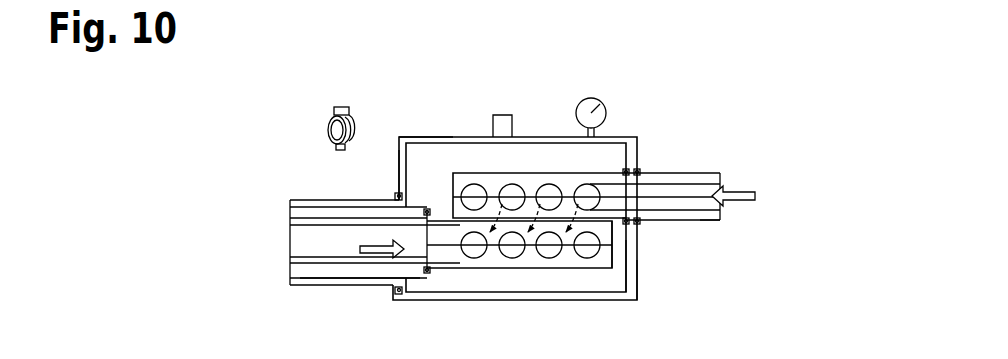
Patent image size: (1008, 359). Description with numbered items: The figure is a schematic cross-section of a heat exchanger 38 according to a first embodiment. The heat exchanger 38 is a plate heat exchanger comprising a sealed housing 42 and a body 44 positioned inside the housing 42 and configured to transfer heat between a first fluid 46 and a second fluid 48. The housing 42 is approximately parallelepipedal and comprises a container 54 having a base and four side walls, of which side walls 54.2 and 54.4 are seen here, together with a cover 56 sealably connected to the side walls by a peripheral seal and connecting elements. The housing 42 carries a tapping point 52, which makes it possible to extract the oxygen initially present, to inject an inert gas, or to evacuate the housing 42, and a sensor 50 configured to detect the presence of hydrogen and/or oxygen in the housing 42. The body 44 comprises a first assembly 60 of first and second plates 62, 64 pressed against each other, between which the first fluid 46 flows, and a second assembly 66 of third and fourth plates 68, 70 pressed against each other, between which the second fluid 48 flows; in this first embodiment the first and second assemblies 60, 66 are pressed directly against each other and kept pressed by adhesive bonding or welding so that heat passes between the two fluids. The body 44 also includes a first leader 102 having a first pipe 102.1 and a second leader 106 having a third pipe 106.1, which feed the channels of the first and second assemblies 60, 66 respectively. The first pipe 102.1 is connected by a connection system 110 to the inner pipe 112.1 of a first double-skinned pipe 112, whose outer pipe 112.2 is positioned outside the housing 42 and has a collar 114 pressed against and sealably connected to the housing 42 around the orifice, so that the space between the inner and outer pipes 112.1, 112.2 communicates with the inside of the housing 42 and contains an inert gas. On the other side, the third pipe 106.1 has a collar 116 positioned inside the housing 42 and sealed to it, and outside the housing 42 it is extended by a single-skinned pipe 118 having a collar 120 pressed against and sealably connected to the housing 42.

The heat exchanger 38 is at (732, 142).
The housing 42 is at (432, 134).
The body 44 is at (470, 172).
The first fluid 46 is at (355, 245).
The second fluid 48 is at (762, 195).
The sensor 50 is at (608, 108).
The tapping point 52 is at (492, 115).
The container 54 is at (637, 275).
The side wall 54.2 is at (397, 172).
The side wall 54.4 is at (637, 258).
The cover 56 is at (412, 136).
The first assembly 60 is at (527, 258).
The first plate 62 is at (567, 258).
The second plate 64 is at (605, 242).
The second assembly 66 is at (533, 174).
The third plate 68 is at (583, 172).
The fourth plate 70 is at (571, 196).
The first leader 102 is at (452, 263).
The first pipe 102.1 is at (436, 283).
The second leader 106 is at (613, 172).
The third pipe 106.1 is at (645, 212).
The connection system 110 is at (323, 113).
The first double-skinned pipe 112 is at (317, 288).
The inner pipe 112.1 is at (364, 283).
The outer pipe 112.2 is at (290, 289).
The collar 114 is at (397, 193).
The collar 116 is at (640, 224).
The single-skinned pipe 118 is at (723, 213).
The collar 120 is at (720, 176).